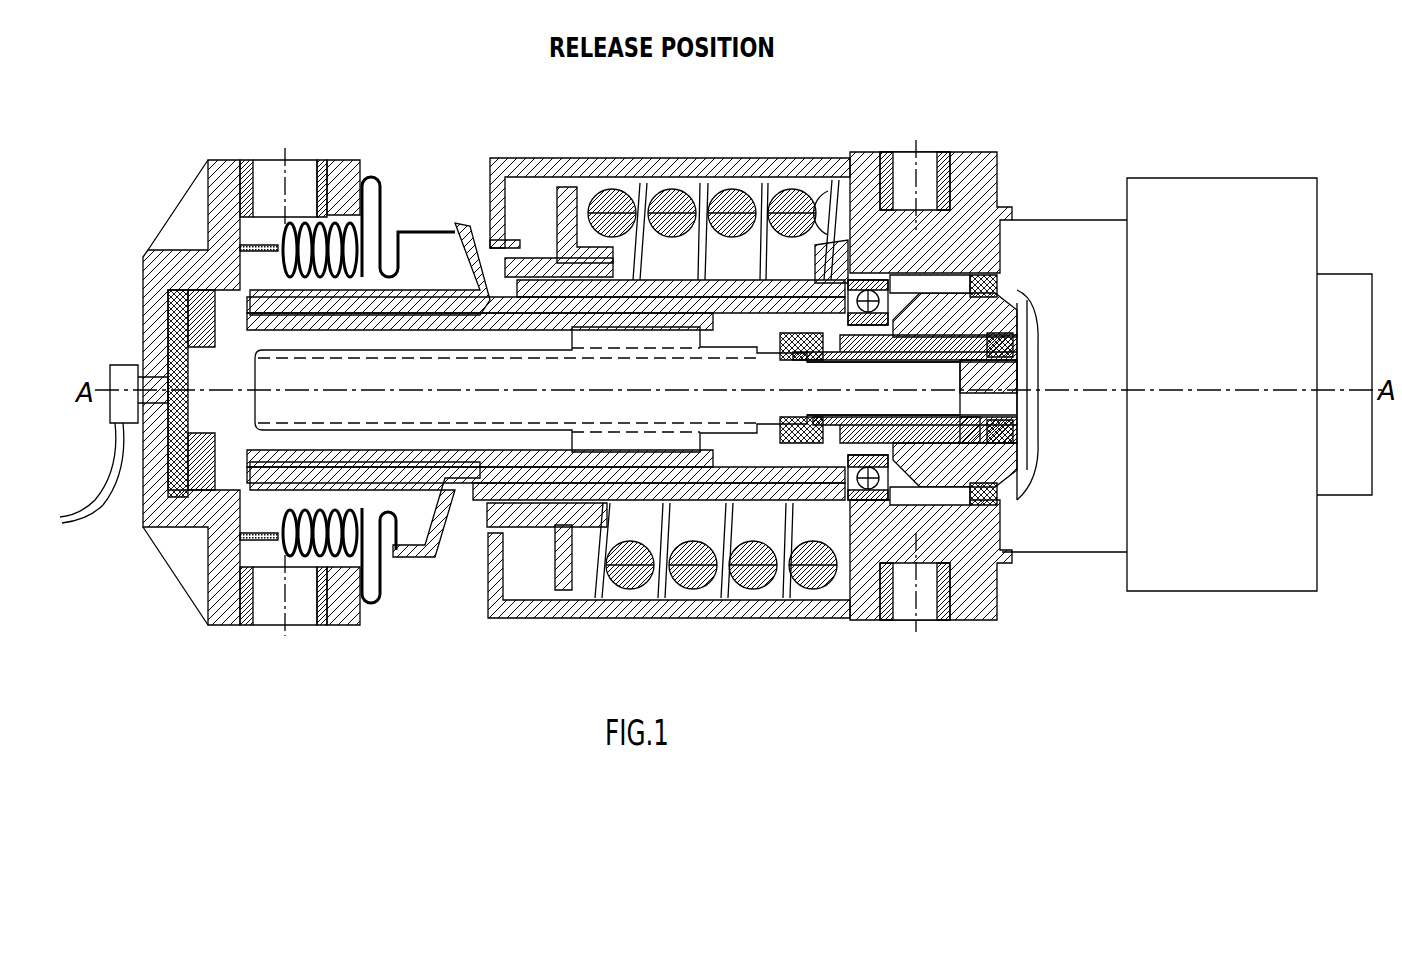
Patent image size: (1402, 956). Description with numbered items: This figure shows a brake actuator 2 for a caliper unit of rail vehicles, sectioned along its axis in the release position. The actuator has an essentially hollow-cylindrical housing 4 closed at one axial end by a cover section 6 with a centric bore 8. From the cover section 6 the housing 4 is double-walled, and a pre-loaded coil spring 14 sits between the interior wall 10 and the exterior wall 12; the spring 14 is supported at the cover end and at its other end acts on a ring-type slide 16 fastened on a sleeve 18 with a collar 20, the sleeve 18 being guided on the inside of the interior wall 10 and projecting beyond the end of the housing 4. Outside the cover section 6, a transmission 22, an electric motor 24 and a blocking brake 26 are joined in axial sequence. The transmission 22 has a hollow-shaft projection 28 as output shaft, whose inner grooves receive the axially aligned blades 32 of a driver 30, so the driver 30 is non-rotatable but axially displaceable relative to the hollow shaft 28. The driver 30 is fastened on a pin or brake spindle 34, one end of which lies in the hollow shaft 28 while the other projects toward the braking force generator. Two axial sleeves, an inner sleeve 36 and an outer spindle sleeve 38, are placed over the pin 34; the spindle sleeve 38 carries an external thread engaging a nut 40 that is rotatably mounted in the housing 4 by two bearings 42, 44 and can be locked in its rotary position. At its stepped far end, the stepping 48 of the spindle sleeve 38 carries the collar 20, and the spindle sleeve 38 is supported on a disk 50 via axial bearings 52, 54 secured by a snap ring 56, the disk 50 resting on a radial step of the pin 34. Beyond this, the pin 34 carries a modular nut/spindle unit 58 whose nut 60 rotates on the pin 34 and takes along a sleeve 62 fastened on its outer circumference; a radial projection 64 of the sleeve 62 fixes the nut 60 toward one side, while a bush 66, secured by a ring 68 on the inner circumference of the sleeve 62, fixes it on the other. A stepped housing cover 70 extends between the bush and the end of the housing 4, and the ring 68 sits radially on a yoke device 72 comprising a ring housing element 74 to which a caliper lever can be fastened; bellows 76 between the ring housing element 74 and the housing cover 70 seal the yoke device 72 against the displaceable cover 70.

The brake actuator 2 is at (520, 157).
The housing 4 is at (802, 160).
The cover section 6 is at (957, 263).
The centric bore 8 is at (1000, 223).
The interior wall 10 is at (633, 288).
The exterior wall 12 is at (823, 263).
The pre-loaded spring 14 is at (702, 285).
The ring-type slide 16 is at (572, 192).
The sleeve 18 is at (760, 283).
The collar 20 is at (457, 217).
The transmission 22 is at (1058, 232).
The electric motor 24 is at (1170, 193).
The blocking brake 26 is at (1342, 287).
The hollow-shaft projection 28 is at (1010, 475).
The driver 30 is at (1037, 435).
The blades 32 is at (1040, 410).
The pin 34 is at (1030, 380).
The inner sleeve 36 is at (1010, 405).
The spindle sleeve 38 is at (818, 287).
The nut 40 is at (930, 530).
The bearing 42 is at (913, 500).
The bearing 44 is at (997, 505).
The stepping 48 is at (800, 505).
The disk 50 is at (757, 505).
The axial bearing 52 is at (870, 500).
The axial bearing 54 is at (663, 505).
The snap ring 56 is at (762, 342).
The nut/spindle unit 58 is at (535, 530).
The nut 60 is at (594, 440).
The sleeve 62 is at (443, 476).
The radial projection 64 is at (713, 445).
The bush 66 is at (467, 552).
The ring 68 is at (148, 537).
The housing cover 70 is at (490, 200).
The yoke device 72 is at (160, 330).
The ring housing element 74 is at (341, 180).
The bellows 76 is at (393, 600).